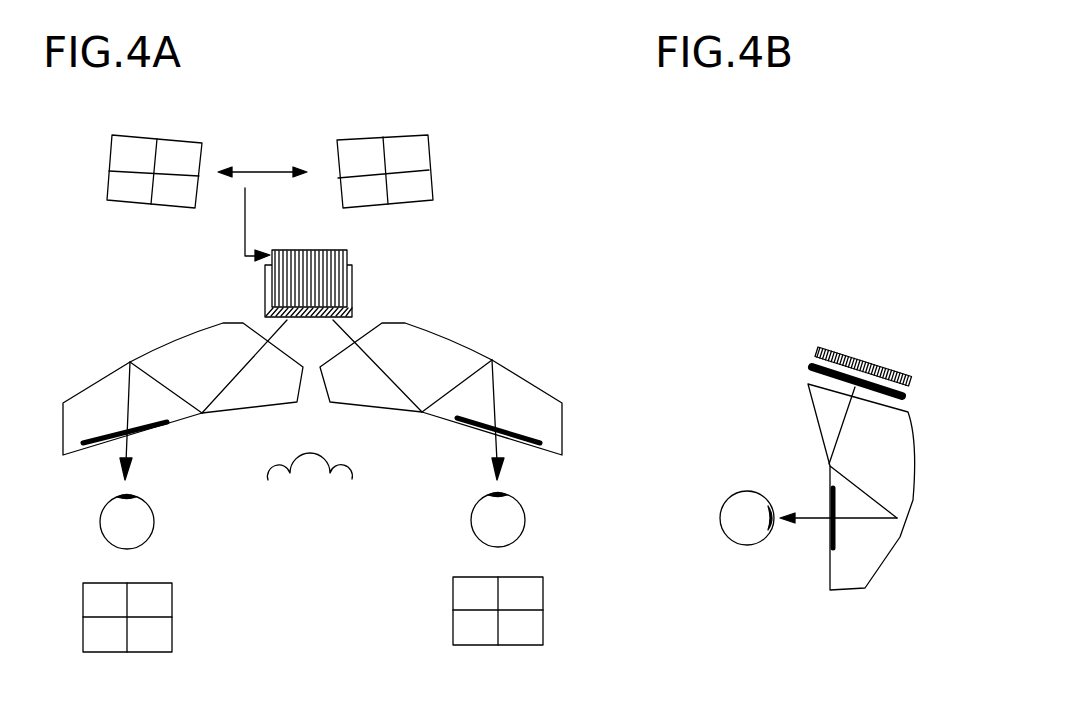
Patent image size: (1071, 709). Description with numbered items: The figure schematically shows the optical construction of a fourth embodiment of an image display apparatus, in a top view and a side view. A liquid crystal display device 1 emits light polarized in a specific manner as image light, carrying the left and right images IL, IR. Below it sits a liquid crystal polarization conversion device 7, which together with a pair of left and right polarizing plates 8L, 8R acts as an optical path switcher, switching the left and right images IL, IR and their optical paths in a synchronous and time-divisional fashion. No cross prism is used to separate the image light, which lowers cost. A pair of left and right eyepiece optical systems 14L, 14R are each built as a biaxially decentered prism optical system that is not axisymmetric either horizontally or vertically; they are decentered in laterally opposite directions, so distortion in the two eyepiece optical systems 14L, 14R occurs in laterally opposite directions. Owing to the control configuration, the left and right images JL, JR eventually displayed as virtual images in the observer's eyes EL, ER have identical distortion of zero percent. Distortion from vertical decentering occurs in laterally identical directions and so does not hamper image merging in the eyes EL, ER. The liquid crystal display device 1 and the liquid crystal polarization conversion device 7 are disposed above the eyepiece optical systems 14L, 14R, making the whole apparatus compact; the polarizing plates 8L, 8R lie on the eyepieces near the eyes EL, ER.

In FIG. 4A, the left image IL is at (110, 180).
In FIG. 4A, the right image IR is at (430, 177).
In FIG. 4A, the liquid crystal display device 1 is at (347, 253).
In FIG. 4B, the liquid crystal display device 1 is at (818, 352).
In FIG. 4A, the liquid crystal polarization conversion device 7 is at (352, 290).
In FIG. 4B, the liquid crystal polarization conversion device 7 is at (813, 367).
In FIG. 4A, the left eyepiece optical system 14L is at (95, 383).
In FIG. 4B, the left eyepiece optical system 14L is at (797, 487).
In FIG. 4A, the right eyepiece optical system 14R is at (537, 386).
In FIG. 4B, the right eyepiece optical system 14R is at (808, 385).
In FIG. 4A, the left polarizing plate 8L is at (157, 424).
In FIG. 4B, the left polarizing plate 8L is at (775, 493).
In FIG. 4A, the right polarizing plate 8R is at (470, 421).
In FIG. 4B, the right polarizing plate 8R is at (830, 493).
In FIG. 4A, the left eye EL is at (155, 515).
In FIG. 4B, the left eye EL is at (762, 546).
In FIG. 4A, the right eye ER is at (523, 503).
In FIG. 4B, the right eye ER is at (728, 541).
In FIG. 4A, the left displayed image JL is at (173, 625).
In FIG. 4A, the right displayed image JR is at (545, 622).